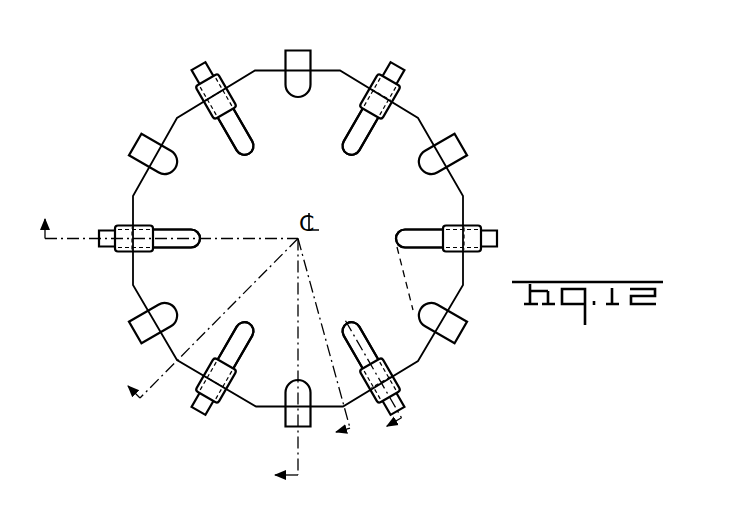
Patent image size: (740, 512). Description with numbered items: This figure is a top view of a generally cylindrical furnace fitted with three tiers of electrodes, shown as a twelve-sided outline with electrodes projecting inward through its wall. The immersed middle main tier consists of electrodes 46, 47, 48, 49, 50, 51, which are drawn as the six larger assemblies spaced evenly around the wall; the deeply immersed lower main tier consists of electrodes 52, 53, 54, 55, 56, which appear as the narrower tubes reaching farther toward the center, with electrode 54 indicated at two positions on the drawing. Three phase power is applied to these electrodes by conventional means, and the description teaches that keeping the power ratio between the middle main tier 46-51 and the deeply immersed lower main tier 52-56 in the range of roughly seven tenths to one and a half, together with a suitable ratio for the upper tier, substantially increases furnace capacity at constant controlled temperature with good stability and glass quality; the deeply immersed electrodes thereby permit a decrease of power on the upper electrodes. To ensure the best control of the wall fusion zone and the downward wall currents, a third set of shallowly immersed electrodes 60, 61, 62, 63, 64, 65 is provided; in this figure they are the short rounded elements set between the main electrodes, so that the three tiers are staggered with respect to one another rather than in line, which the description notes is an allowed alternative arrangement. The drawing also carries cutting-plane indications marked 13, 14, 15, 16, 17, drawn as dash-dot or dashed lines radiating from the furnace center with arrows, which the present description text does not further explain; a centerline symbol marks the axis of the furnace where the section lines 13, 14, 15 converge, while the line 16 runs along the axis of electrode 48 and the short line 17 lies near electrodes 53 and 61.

The section line 13- 13 is at (164, 295).
The section line 14- 14 is at (271, 359).
The section line 15- 15 is at (324, 351).
The section line 16- 16 is at (368, 392).
The section line 17- 17 is at (393, 237).
The middle main tier electrode 46 is at (397, 113).
The middle main tier electrode 47 is at (452, 226).
The middle main tier electrode 48 is at (397, 365).
The middle main tier electrode 49 is at (223, 395).
The middle main tier electrode 50 is at (133, 266).
The middle main tier electrode 51 is at (207, 102).
The lower main tier electrode 52 is at (363, 140).
The lower main tier electrode 53 is at (407, 230).
The lower main tier electrode 54 is at (250, 325).
The lower main tier electrode 55 is at (180, 247).
The lower main tier electrode 56 is at (233, 137).
The shallowly immersed electrode 60 is at (417, 165).
The shallowly immersed electrode 61 is at (427, 304).
The shallowly immersed electrode 62 is at (313, 392).
The shallowly immersed electrode 63 is at (172, 304).
The shallowly immersed electrode 64 is at (178, 174).
The shallowly immersed electrode 65 is at (300, 97).